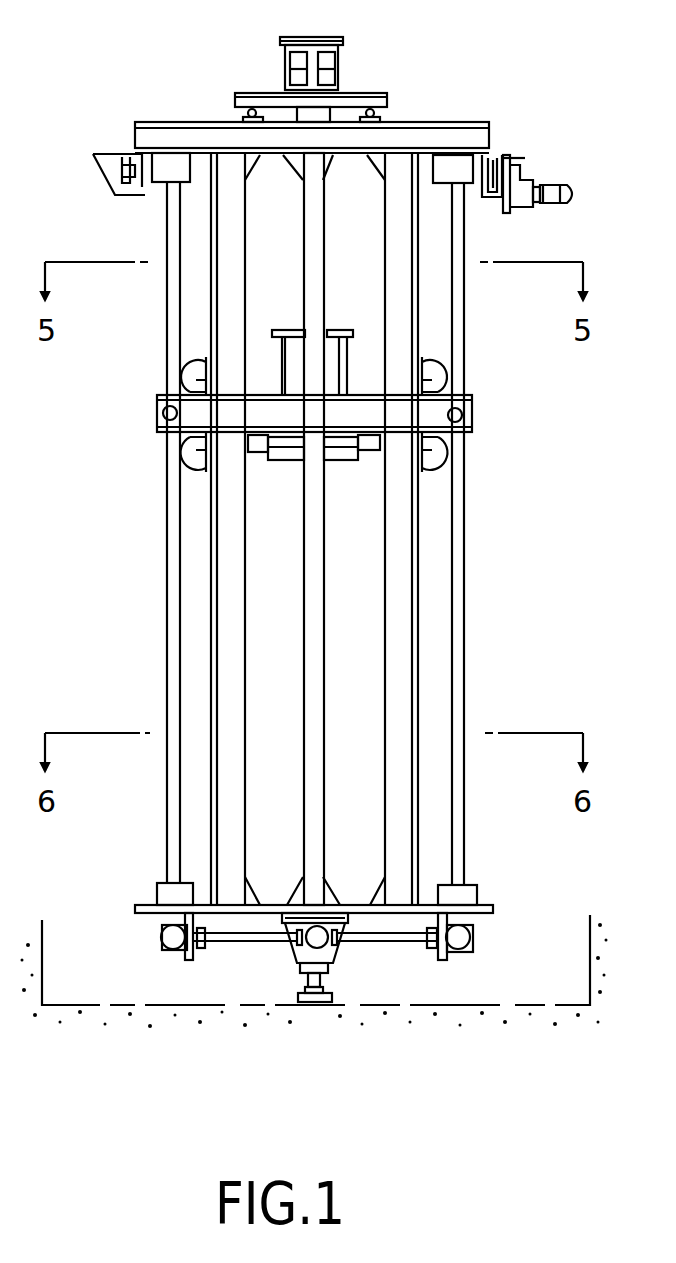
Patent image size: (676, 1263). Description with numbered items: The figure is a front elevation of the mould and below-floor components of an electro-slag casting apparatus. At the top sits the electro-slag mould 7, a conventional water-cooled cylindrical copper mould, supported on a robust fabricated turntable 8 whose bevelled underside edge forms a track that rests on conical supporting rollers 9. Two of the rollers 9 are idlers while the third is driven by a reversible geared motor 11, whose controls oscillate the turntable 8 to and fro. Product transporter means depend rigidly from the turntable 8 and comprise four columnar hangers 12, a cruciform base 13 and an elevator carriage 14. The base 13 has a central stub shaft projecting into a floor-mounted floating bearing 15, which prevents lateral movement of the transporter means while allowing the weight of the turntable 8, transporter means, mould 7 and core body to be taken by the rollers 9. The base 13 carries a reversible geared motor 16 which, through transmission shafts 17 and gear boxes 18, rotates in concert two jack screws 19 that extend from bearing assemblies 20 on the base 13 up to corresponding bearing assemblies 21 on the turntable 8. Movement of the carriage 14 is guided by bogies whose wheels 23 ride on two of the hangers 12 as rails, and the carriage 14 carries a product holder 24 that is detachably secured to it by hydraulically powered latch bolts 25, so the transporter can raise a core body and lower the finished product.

The electro-slag mould 7 is at (337, 63).
The turntable 8 is at (420, 136).
The conical supporting rollers 9 is at (130, 162).
The geared motor 11 is at (556, 186).
The columnar hangers 12 is at (222, 612).
The cruciform base 13 is at (258, 914).
The elevator carriage 14 is at (470, 420).
The floating bearing 15 is at (313, 1008).
The reversible geared motor 16 is at (334, 957).
The transmission shafts 17 is at (212, 941).
The gear boxes 18 is at (163, 940).
The jack screws 19 is at (170, 695).
The bearing assemblies 20 is at (163, 893).
The bearing assemblies 21 is at (180, 178).
The wheels 23 is at (428, 375).
The product holder 24 is at (334, 335).
The latch bolts 25 is at (360, 444).